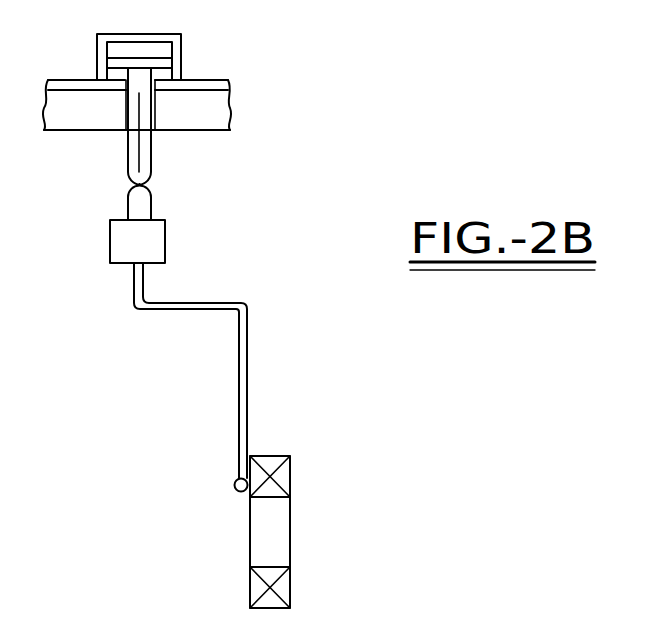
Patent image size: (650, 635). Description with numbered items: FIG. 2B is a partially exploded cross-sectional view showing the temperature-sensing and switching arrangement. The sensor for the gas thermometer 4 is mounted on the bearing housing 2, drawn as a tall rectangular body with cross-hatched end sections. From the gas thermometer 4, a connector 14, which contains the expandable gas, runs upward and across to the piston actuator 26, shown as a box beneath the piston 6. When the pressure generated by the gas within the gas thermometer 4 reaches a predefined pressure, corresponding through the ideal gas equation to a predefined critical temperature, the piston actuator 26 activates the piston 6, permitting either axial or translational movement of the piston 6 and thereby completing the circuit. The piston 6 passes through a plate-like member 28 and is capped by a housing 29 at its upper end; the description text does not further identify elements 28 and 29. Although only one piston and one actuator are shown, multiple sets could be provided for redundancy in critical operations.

The mounting cap / housing 29 is at (220, 82).
The wall / support plate 28 is at (220, 112).
The piston 6 is at (152, 163).
The piston actuator 26 is at (115, 242).
The connector 14 is at (248, 337).
The gas thermometer 4 is at (234, 489).
The bearing housing 2 is at (290, 478).